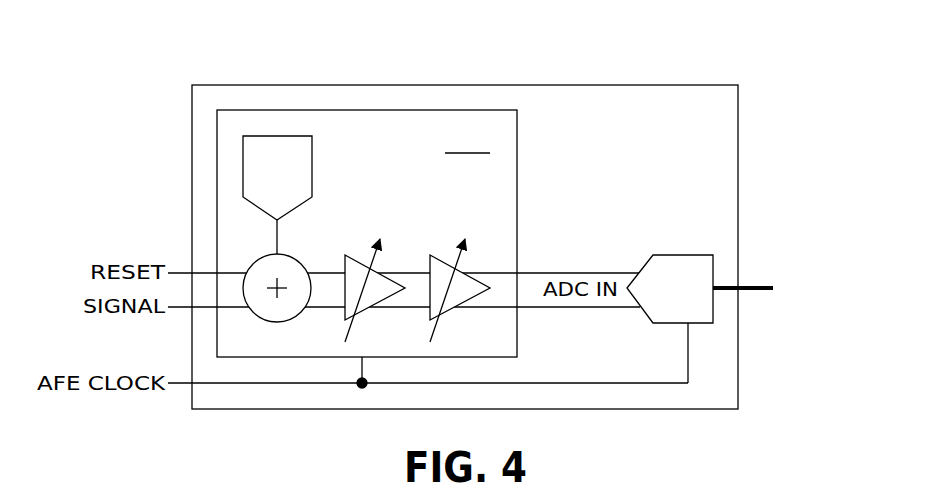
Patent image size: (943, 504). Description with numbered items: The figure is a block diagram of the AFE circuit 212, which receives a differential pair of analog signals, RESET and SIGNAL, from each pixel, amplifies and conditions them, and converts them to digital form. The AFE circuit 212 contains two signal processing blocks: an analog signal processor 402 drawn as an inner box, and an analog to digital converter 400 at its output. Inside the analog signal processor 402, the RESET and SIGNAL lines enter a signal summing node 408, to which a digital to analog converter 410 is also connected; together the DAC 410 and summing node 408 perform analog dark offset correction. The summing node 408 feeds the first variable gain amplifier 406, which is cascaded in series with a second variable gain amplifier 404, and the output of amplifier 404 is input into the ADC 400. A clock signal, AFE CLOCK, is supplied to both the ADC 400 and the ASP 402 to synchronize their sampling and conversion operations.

The AFE circuit 212 is at (753, 67).
The analog signal processor 402 is at (517, 126).
The digital to analog converter 410 is at (312, 150).
The signal summing node 408 is at (280, 321).
The variable gain amplifier 406 is at (362, 313).
The variable gain amplifier 404 is at (447, 313).
The analog to digital converter 400 is at (693, 255).